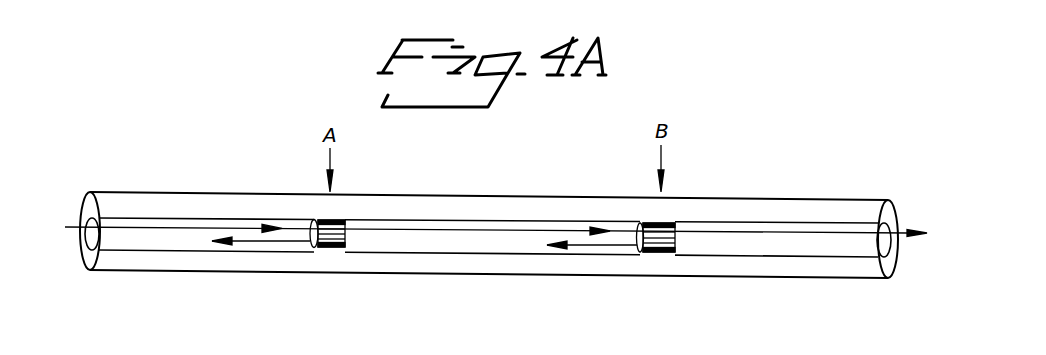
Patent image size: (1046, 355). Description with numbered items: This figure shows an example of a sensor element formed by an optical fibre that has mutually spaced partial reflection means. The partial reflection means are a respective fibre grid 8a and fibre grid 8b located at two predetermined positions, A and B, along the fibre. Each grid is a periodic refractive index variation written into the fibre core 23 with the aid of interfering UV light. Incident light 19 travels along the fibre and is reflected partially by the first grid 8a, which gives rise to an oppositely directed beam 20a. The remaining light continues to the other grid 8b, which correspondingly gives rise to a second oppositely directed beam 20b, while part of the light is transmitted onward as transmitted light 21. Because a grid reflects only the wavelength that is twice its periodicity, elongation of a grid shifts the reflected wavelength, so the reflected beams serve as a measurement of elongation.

The fibre grid 8a is at (328, 218).
The fibre grid 8b is at (657, 223).
The incident light 19 is at (190, 229).
The oppositely directed beam 20a is at (242, 243).
The oppositely directed beam 20b is at (586, 246).
The transmitted light 21 is at (783, 237).
The fibre core 23 is at (407, 246).